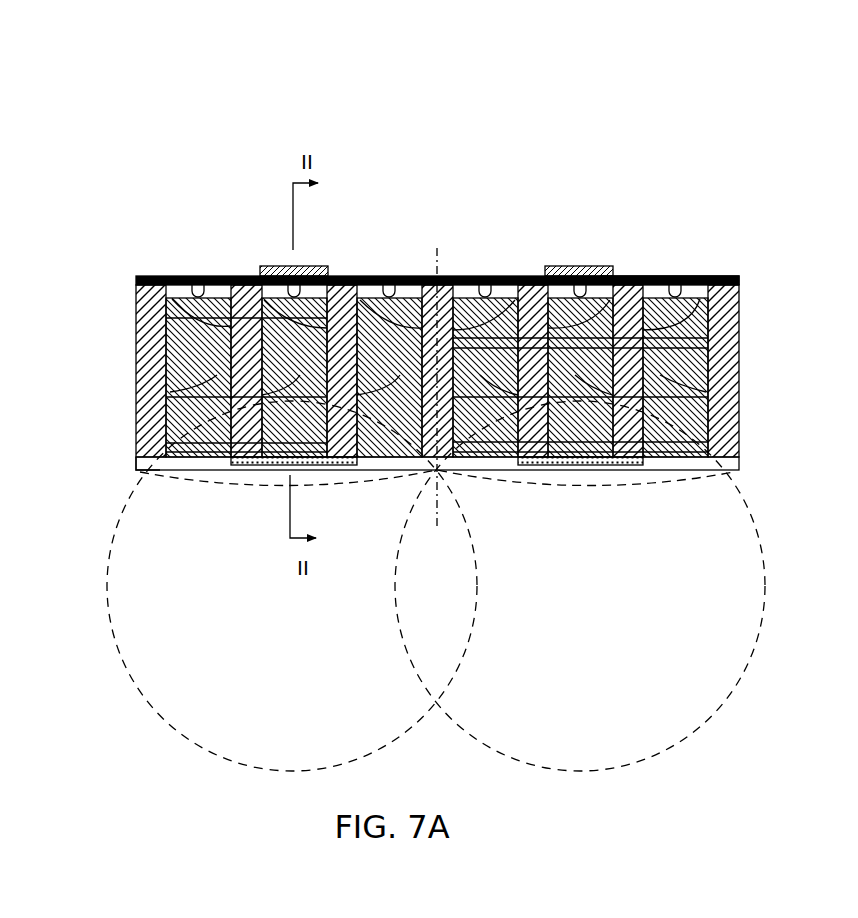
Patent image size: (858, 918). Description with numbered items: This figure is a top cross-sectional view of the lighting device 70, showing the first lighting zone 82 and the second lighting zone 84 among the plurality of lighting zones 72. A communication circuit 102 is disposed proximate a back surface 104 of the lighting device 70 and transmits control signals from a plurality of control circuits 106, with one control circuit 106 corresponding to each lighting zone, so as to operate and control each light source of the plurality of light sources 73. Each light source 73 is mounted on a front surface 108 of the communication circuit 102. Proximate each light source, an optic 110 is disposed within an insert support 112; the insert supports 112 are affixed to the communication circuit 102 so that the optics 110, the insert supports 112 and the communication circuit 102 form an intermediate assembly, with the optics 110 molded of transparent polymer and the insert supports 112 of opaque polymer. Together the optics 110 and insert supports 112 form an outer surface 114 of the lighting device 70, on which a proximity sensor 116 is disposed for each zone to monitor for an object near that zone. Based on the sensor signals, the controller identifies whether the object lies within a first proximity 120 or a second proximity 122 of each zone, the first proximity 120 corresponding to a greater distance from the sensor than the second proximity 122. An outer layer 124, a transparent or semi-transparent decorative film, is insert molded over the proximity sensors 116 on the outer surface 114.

The lighting device 70 is at (375, 90).
The plurality of lighting zones 72 is at (392, 262).
The plurality of light sources 73 is at (330, 326).
The first lighting zone 82 is at (222, 202).
The second lighting zone 84 is at (593, 186).
The communication circuit 102 is at (167, 275).
The back surface 104 is at (701, 268).
The control circuit 106 is at (305, 268).
The front surface 108 is at (740, 305).
The optic 110 is at (330, 402).
The insert support 112 is at (262, 449).
The outer surface 114 is at (190, 466).
The proximity sensor 116 is at (262, 470).
The first proximity 120 is at (182, 725).
The second proximity 122 is at (355, 490).
The outer layer 124 is at (152, 472).